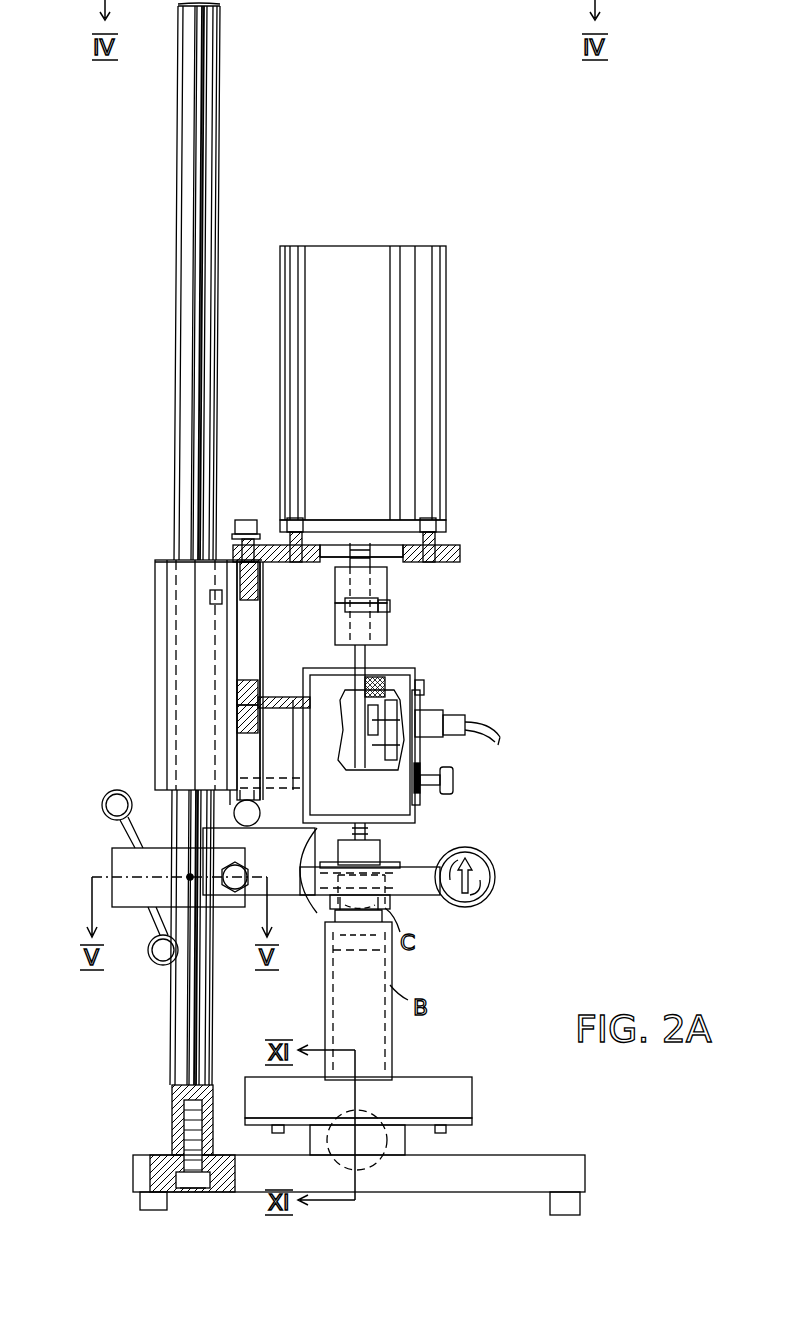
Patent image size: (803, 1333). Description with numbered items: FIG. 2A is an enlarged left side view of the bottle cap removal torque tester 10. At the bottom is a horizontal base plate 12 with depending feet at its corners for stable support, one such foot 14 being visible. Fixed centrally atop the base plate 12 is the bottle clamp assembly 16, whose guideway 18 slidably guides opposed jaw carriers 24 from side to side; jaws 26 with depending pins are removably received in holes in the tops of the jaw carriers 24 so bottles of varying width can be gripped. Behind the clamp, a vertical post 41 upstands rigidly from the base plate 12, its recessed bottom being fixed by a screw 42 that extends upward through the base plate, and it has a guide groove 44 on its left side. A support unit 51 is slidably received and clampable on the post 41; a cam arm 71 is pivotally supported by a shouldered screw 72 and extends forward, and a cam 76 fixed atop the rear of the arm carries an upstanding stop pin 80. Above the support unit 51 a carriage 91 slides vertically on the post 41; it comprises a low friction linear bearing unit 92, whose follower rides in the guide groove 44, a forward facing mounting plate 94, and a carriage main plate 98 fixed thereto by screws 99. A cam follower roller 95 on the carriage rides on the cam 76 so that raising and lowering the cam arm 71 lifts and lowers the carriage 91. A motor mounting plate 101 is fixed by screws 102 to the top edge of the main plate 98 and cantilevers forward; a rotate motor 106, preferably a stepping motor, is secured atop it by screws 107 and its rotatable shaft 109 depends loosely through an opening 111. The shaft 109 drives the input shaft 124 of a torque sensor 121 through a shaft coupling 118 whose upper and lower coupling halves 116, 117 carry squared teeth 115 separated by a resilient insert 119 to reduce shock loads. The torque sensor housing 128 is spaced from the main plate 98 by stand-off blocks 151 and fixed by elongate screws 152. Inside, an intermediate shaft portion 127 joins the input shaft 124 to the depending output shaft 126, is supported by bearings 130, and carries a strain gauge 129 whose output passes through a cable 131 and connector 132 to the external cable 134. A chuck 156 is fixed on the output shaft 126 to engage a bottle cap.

The bottle cap removal torque tester 10 is at (558, 320).
The horizontal base plate 12 is at (585, 1172).
The base foot 14 is at (578, 1208).
The bottle clamp assembly 16 is at (391, 1109).
The guideway 18 is at (400, 1140).
The jaw carriers 24 is at (470, 1122).
The jaws 26 is at (462, 1100).
The vertical post 41 is at (178, 130).
The screw 42 is at (194, 1186).
The guide groove 44 is at (200, 146).
The support unit 51 is at (97, 860).
The cam arm 71 is at (418, 885).
The shouldered screw 72 is at (236, 892).
The cam 76 is at (290, 848).
The stop pin 80 is at (200, 813).
The carriage 91 is at (142, 632).
The low friction linear bearing unit 92 is at (155, 578).
The mounting plate 94 is at (237, 572).
The cam follower roller 95 is at (243, 800).
The carriage main plate 98 is at (247, 648).
The screws 99 is at (210, 596).
The motor mounting plate 101 is at (460, 552).
The screws 102 is at (246, 520).
The rotate motor 106 is at (433, 292).
The screws 107 is at (437, 520).
The rotatable shaft 109 is at (355, 545).
The opening 111 is at (395, 562).
The squared teeth 115 is at (390, 606).
The upper coupling half 116 is at (343, 584).
The lower coupling half 117 is at (338, 645).
The shaft coupling 118 is at (322, 634).
The resilient insert 119 is at (346, 608).
The torque sensor 121 is at (433, 681).
The input shaft 124 is at (363, 656).
The output shaft 126 is at (370, 832).
The intermediate shaft portion 127 is at (420, 792).
The housing 128 is at (423, 703).
The strain gauge 129 is at (420, 748).
The bearings 130 is at (432, 674).
The cable 131 is at (420, 765).
The connector 132 is at (460, 745).
The external cable 134 is at (480, 730).
The stand-off blocks 151 is at (270, 738).
The elongate screws 152 is at (265, 693).
The chuck 156 is at (468, 850).